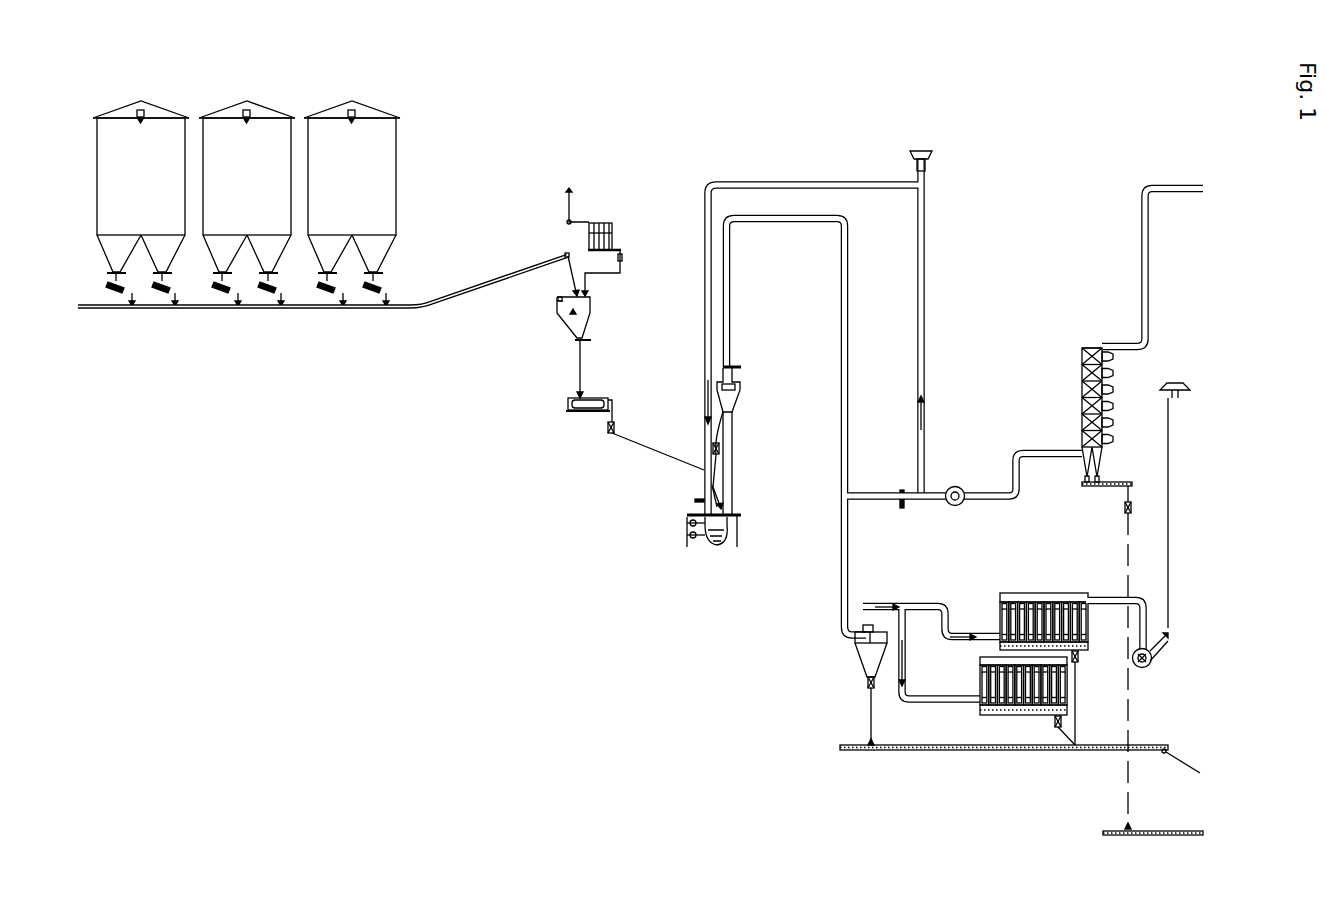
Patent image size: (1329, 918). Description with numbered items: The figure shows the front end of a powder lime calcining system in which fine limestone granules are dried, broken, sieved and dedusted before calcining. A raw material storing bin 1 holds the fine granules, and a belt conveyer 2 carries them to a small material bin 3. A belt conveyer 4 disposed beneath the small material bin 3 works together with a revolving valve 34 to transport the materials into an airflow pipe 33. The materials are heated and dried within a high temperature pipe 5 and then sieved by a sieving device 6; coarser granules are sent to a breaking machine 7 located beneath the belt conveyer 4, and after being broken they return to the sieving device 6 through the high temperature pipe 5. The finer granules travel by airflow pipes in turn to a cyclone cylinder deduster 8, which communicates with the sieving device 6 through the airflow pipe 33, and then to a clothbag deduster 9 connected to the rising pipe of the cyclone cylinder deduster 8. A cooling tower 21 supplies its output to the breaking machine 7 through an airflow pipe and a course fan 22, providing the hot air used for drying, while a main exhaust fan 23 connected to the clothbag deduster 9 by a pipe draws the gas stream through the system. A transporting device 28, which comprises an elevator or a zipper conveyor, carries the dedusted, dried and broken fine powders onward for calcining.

The raw material storing bin 1 is at (340, 108).
The belt conveyer 2 is at (489, 280).
The small material bin 3 is at (558, 317).
The belt conveyer 4 is at (568, 403).
The revolving valve 34 is at (608, 434).
The high temperature pipe 5 is at (735, 457).
The sieving device 6 is at (735, 396).
The breaking machine 7 is at (725, 522).
The airflow pipe 33 is at (1143, 280).
The cooling tower 21 is at (1085, 385).
The course fan 22 is at (958, 488).
The clothbag deduster 9 is at (988, 660).
The cyclone cylinder deduster 8 is at (866, 654).
The main exhaust fan 23 is at (1150, 664).
The transporting device 28 is at (1053, 752).